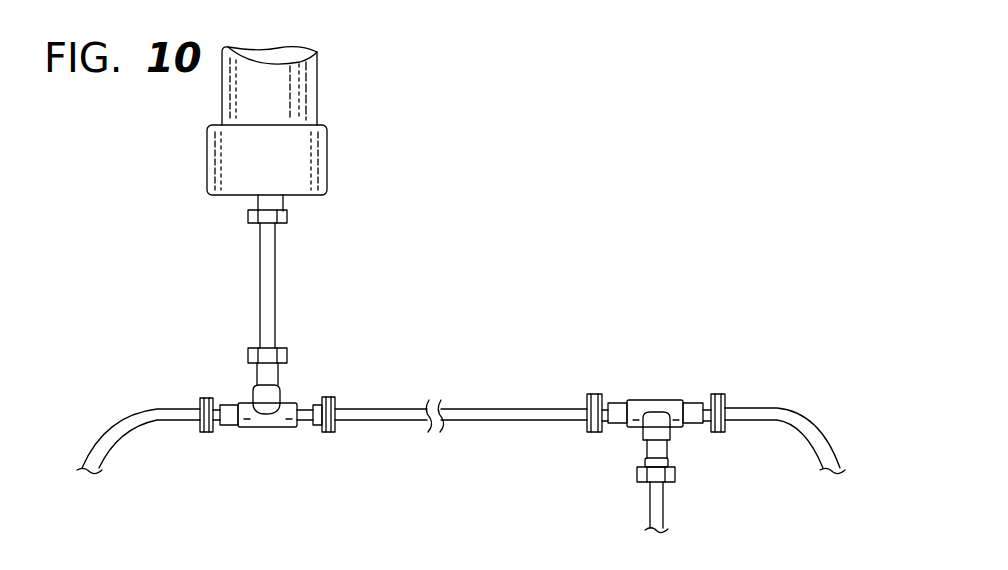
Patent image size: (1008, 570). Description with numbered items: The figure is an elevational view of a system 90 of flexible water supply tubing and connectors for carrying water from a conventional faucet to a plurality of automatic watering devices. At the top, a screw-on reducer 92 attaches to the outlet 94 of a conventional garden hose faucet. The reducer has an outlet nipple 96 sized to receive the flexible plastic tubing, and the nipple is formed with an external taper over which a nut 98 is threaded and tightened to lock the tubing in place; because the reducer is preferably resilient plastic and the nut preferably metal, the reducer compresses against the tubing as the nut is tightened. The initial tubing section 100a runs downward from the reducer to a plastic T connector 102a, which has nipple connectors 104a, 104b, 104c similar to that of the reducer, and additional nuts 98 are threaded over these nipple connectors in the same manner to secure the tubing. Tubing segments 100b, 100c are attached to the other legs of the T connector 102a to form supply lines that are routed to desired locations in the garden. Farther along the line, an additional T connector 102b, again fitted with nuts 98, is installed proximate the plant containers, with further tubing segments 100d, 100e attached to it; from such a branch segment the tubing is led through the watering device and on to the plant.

The system 90 is at (552, 211).
The screw-on reducer 92 is at (210, 166).
The outlet 94 is at (317, 93).
The outlet nipple 96 is at (257, 200).
The nut 98 is at (290, 214).
The initial tubing section 100a is at (276, 282).
The tubing segment 100b is at (107, 425).
The tubing segment 100c is at (456, 405).
The tubing segment 100d is at (800, 412).
The tubing segment 100e is at (650, 498).
The T connector 102a is at (260, 428).
The T connector 102b is at (658, 400).
The nipple connector 104a is at (273, 362).
The nipple connector 104b is at (214, 429).
The nipple connector 104c is at (319, 429).